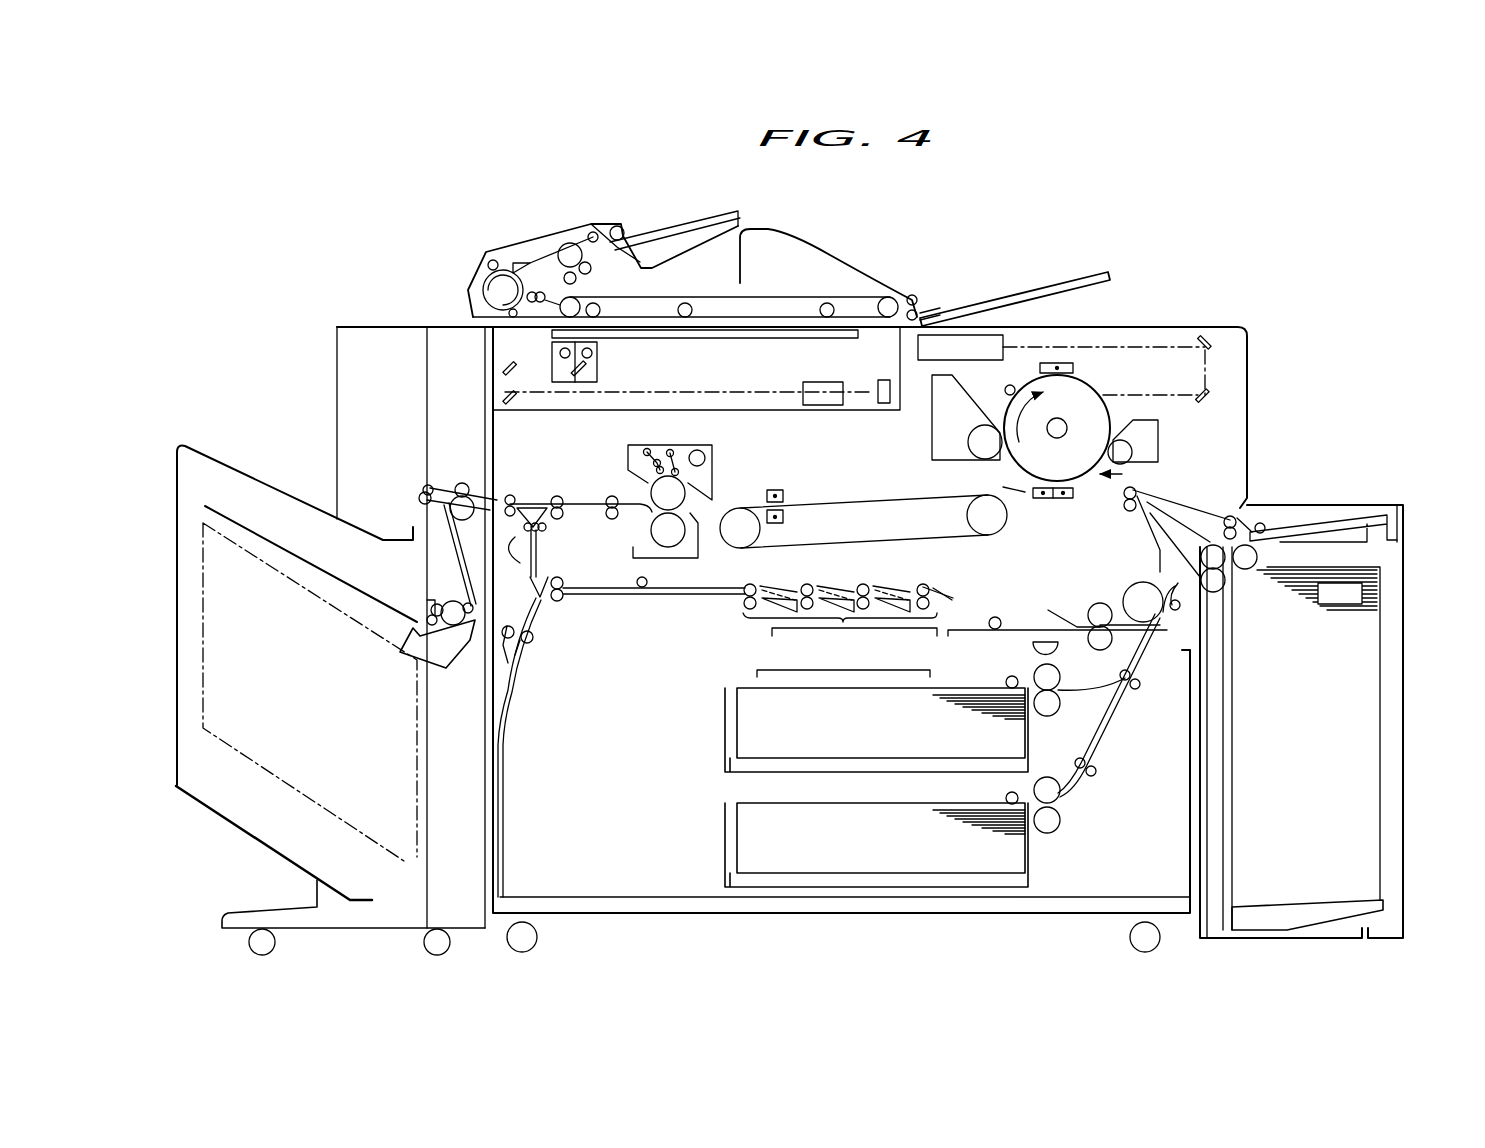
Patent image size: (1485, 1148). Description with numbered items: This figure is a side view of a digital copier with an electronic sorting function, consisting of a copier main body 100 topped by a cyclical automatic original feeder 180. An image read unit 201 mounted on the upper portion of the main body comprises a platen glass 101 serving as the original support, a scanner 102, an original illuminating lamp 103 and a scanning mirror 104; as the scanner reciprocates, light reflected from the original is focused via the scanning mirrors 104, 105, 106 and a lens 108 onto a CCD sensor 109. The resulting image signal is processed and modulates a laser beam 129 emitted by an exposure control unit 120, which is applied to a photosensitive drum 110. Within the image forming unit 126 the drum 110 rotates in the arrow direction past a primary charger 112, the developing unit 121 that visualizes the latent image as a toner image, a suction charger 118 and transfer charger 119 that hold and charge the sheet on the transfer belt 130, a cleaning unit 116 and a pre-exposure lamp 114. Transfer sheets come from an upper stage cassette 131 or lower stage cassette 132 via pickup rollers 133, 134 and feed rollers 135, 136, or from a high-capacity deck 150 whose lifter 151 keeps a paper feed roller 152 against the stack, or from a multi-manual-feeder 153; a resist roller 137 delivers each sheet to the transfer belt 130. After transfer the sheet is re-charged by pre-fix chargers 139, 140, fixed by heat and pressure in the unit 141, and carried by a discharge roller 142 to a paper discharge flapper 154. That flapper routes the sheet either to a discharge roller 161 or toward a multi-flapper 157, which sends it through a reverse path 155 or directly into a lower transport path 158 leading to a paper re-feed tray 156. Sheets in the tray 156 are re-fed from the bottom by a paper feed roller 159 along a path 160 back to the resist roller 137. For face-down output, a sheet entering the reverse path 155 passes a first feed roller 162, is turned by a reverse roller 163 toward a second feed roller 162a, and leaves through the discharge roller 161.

The copier main body 100 is at (1248, 405).
The platen glass 101 is at (723, 335).
The scanner 102 is at (597, 372).
The original illuminating lamp 103 is at (592, 353).
The scanning mirror 104 is at (588, 380).
The scanning mirror 105 is at (505, 368).
The scanning mirror 106 is at (505, 397).
The lens 108 is at (803, 392).
The CCD sensor 109 is at (884, 380).
The photosensitive drum 110 is at (1100, 400).
The primary charger 112 is at (1073, 365).
The pre-exposure lamp 114 is at (1012, 388).
The cleaning unit 116 is at (932, 430).
The suction charger 118 is at (1063, 500).
The transfer charger 119 is at (1043, 500).
The exposure control unit 120 is at (968, 335).
The developing unit 121 is at (1158, 445).
The image forming unit 126 is at (1122, 474).
The laser beam 129 is at (1143, 347).
The transfer belt 130 is at (965, 500).
The upper stage cassette 131 is at (740, 735).
The lower stage cassette 132 is at (740, 842).
The pickup roller 133 is at (1008, 680).
The pickup roller 134 is at (1008, 795).
The feed roller 135 is at (1094, 750).
The feed roller 136 is at (1055, 823).
The resist roller 137 is at (1128, 505).
The pre-fix charger 139 is at (783, 488).
The pre-fix charger 140 is at (783, 522).
The developing unit 141 is at (712, 467).
The discharge roller 142 is at (612, 496).
The deck 150 is at (1403, 648).
The lifter 151 is at (1383, 905).
The paper feed roller 152 is at (1244, 562).
The multi-manual-feeder 153 is at (1312, 520).
The paper discharge flapper 154 is at (557, 496).
The reverse path 155 is at (510, 720).
The paper re-feed tray 156 is at (985, 608).
The multi-flapper 157 is at (541, 600).
The lower transport path 158 is at (842, 630).
The paper feed roller 159 is at (1143, 605).
The path 160 is at (1165, 572).
The discharge roller 161 is at (511, 494).
The first feed roller 162 is at (546, 527).
The second feed roller 162a is at (530, 540).
The reverse roller 163 is at (527, 645).
The automatic original feeder 180 is at (883, 272).
The image read unit 201 is at (745, 357).